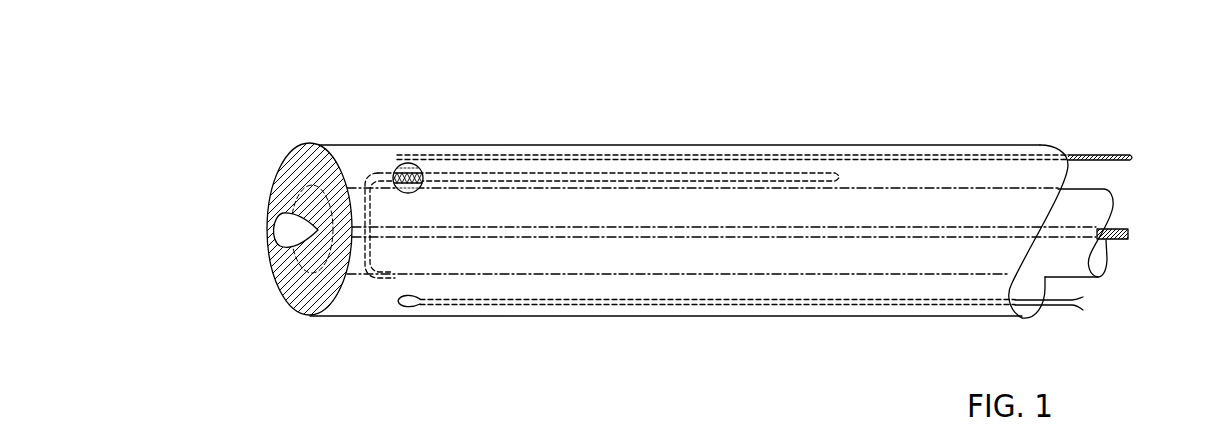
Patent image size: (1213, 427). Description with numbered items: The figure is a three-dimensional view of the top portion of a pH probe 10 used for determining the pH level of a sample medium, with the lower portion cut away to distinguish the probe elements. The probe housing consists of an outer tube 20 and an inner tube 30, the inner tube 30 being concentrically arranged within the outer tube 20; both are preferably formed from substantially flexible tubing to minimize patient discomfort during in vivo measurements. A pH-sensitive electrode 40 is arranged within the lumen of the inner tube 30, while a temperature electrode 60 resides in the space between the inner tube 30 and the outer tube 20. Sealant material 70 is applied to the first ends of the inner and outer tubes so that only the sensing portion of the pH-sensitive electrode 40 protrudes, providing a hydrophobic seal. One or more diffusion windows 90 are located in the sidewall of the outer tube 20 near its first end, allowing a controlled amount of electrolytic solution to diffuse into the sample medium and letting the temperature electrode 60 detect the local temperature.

The pH probe 10 is at (932, 78).
The outer tube 20 is at (1020, 145).
The inner tube 30 is at (1113, 195).
The pH-sensitive electrode 40 is at (1118, 242).
The temperature electrode 60 is at (1053, 308).
The sealant material 70 is at (300, 175).
The diffusion windows 90 is at (394, 163).